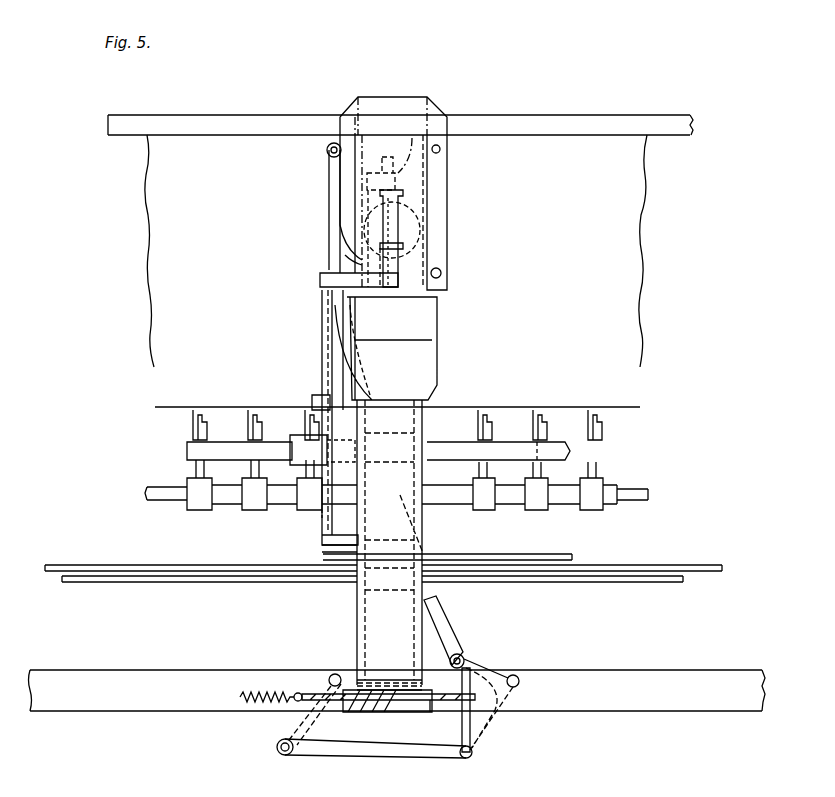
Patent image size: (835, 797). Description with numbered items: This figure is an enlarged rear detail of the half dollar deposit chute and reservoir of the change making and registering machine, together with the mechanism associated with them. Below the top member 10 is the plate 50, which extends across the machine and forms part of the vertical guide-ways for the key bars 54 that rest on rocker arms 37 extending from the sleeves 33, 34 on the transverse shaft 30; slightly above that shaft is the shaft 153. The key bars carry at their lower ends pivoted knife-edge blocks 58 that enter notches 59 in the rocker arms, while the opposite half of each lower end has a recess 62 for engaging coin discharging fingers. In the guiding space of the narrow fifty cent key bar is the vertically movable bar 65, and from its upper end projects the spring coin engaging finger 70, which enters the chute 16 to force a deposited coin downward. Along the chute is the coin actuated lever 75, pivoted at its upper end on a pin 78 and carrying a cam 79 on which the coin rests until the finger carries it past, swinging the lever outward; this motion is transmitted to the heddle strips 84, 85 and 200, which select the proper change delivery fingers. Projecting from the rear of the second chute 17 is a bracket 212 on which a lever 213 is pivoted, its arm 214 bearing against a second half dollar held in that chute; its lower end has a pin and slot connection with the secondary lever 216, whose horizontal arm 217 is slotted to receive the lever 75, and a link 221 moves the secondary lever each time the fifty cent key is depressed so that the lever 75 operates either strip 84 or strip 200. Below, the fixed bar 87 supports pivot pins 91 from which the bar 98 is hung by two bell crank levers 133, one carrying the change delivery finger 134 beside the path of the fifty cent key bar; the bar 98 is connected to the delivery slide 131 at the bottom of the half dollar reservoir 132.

The top plate 10 is at (690, 128).
The chute 16 is at (412, 105).
The coin chute 17 is at (410, 176).
The shaft 30 is at (640, 496).
The sleeve 33 is at (565, 500).
The sleeve 34 is at (352, 516).
The rocker arms 37 is at (255, 463).
The plate 50 is at (633, 283).
The key bars 54 is at (604, 427).
The pivoted blocks 58 is at (193, 434).
The notches 59 is at (190, 448).
The recess 62 is at (242, 425).
The vertically movable bar 65 is at (386, 372).
The spring coin engaging finger 70 is at (402, 146).
The coin actuated lever 75 is at (327, 216).
The pin 78 is at (326, 152).
The cam 79 is at (347, 262).
The heddle strip 84 is at (150, 560).
The heddle strip 85 is at (155, 583).
The fixed parallel bar 87 is at (727, 708).
The pivot pins 91 is at (518, 678).
The bar 98 is at (367, 748).
The delivery slide 131 is at (440, 705).
The half dollar reservoir 132 is at (365, 612).
The bell crank lever 133 is at (487, 726).
The change delivery finger 134 is at (462, 632).
The shaft 153 is at (545, 458).
The heddle strip 200 is at (496, 557).
The bracket 212 is at (403, 246).
The lever 213 is at (332, 288).
The arm 214 is at (403, 193).
The secondary lever 216 is at (322, 488).
The horizontally disposed arm 217 is at (324, 541).
The link 221 is at (307, 440).